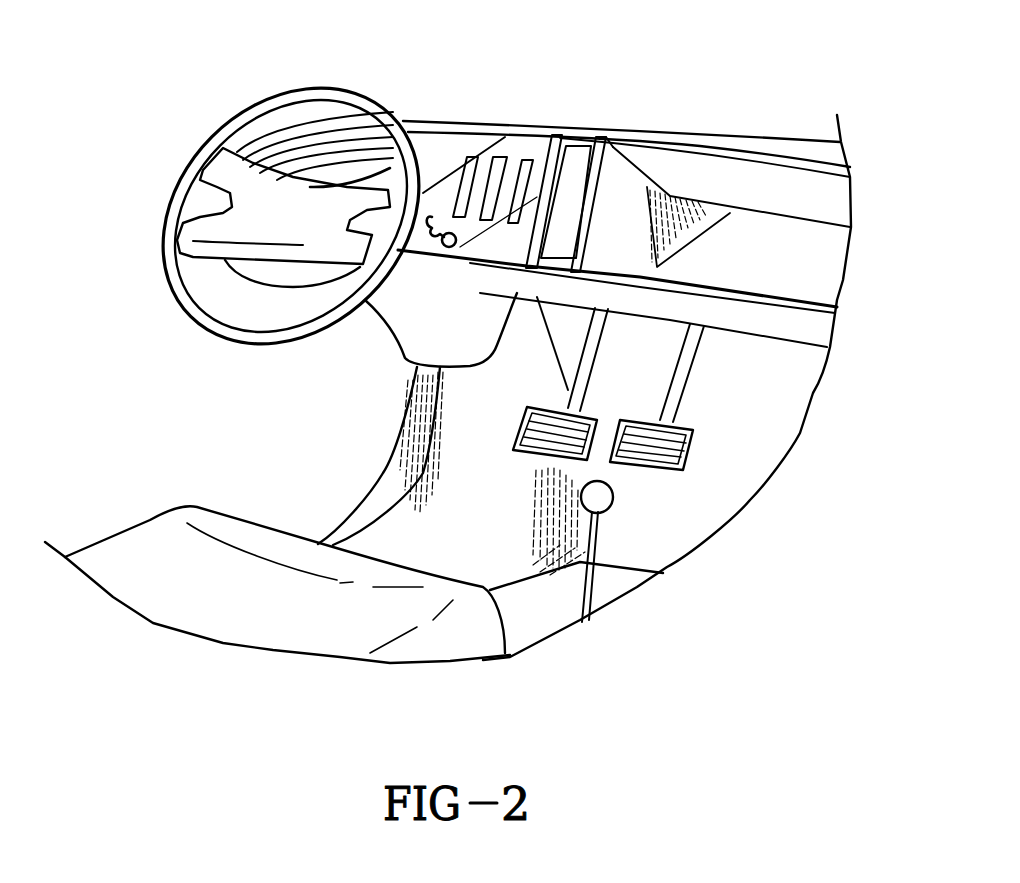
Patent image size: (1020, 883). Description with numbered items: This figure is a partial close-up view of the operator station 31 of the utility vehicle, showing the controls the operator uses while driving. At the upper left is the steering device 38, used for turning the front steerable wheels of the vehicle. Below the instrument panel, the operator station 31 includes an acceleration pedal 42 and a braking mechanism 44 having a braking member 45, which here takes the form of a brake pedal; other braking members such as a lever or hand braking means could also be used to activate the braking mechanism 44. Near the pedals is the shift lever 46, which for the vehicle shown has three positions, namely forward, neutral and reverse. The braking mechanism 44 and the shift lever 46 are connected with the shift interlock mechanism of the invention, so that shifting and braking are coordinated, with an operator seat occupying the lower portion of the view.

The steering device 38 is at (320, 90).
The operator station 31 is at (617, 126).
The braking member 45 is at (525, 412).
The acceleration pedal 42 is at (660, 447).
The braking mechanism 44 is at (521, 477).
The shift lever 46 is at (600, 496).